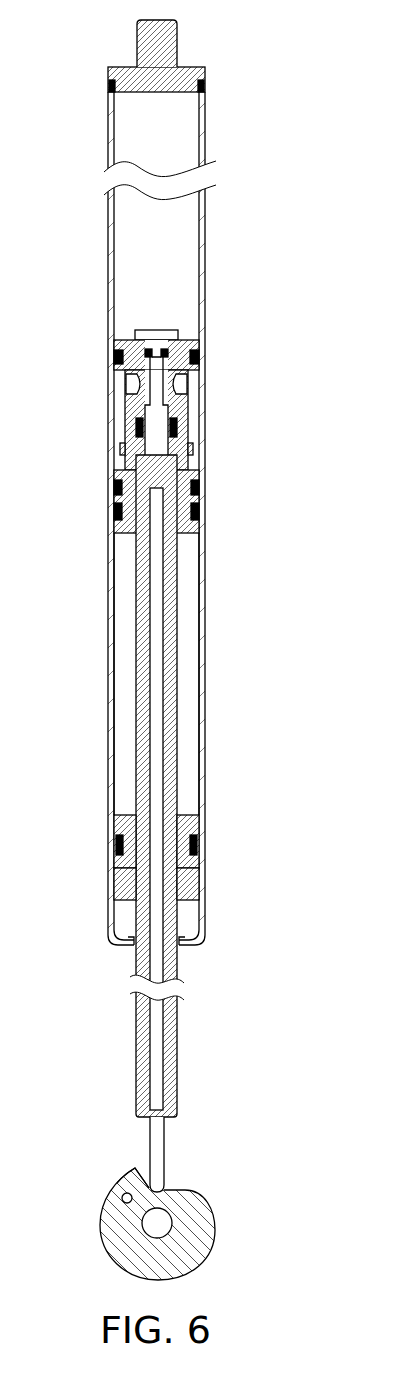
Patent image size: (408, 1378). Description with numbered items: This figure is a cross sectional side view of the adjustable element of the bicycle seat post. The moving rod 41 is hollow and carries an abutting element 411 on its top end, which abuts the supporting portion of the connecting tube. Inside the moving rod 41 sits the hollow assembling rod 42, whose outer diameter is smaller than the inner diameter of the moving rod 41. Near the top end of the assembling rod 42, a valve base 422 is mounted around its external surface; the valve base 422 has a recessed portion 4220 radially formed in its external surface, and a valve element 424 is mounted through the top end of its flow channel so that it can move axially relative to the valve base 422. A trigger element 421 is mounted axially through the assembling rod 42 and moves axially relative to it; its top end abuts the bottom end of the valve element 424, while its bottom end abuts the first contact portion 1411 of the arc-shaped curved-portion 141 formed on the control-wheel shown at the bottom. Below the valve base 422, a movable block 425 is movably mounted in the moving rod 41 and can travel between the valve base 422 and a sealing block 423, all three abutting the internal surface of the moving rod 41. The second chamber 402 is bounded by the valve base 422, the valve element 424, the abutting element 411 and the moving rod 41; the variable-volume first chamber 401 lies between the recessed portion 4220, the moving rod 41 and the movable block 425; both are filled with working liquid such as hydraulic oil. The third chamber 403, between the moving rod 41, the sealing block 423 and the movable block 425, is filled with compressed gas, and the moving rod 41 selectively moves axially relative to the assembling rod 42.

The moving rod 41 is at (204, 118).
The abutting element 411 is at (165, 48).
The second chamber 402 is at (172, 239).
The valve base 422 is at (185, 352).
The recessed portion 4220 is at (185, 402).
The first chamber 401 is at (189, 430).
The valve element 424 is at (160, 453).
The movable block 425 is at (118, 525).
The assembling rod 42 is at (171, 1025).
The third chamber 403 is at (188, 711).
The sealing block 423 is at (188, 824).
The curved-portion 141 is at (185, 1190).
The first contact portion 1411 is at (135, 1168).
The trigger element 421 is at (157, 1136).